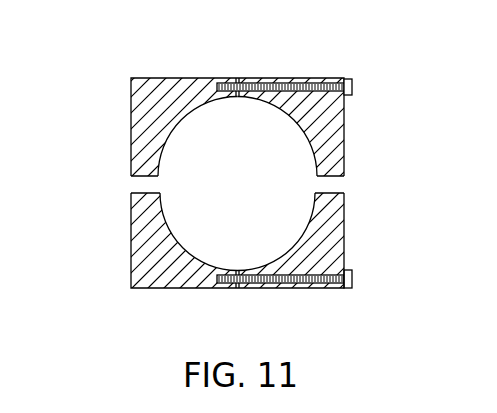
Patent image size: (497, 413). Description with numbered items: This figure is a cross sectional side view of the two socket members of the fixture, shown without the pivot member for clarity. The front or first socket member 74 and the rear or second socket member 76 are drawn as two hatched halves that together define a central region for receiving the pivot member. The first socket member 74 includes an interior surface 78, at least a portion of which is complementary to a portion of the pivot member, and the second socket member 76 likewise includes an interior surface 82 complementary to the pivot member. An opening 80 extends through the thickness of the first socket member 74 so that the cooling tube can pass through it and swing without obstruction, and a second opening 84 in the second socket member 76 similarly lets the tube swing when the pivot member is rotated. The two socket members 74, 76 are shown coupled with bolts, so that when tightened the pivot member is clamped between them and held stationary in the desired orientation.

The first socket member 74 is at (173, 78).
The second socket member 76 is at (307, 78).
The interior surface 78 is at (178, 123).
The opening 80 is at (142, 190).
The interior surface 82 is at (297, 123).
The second opening 84 is at (333, 190).